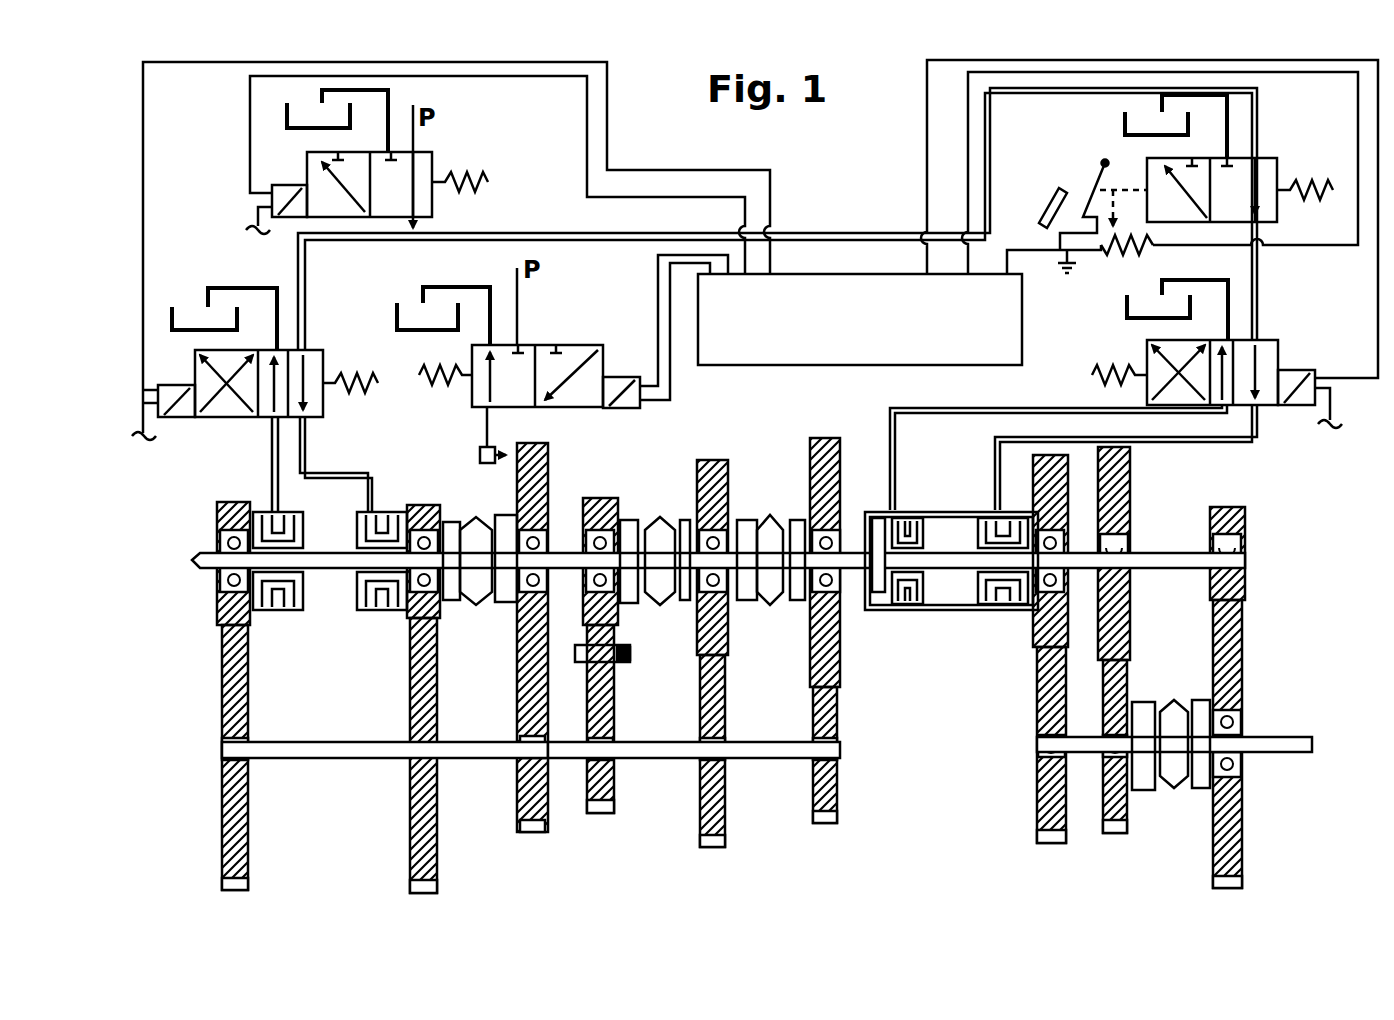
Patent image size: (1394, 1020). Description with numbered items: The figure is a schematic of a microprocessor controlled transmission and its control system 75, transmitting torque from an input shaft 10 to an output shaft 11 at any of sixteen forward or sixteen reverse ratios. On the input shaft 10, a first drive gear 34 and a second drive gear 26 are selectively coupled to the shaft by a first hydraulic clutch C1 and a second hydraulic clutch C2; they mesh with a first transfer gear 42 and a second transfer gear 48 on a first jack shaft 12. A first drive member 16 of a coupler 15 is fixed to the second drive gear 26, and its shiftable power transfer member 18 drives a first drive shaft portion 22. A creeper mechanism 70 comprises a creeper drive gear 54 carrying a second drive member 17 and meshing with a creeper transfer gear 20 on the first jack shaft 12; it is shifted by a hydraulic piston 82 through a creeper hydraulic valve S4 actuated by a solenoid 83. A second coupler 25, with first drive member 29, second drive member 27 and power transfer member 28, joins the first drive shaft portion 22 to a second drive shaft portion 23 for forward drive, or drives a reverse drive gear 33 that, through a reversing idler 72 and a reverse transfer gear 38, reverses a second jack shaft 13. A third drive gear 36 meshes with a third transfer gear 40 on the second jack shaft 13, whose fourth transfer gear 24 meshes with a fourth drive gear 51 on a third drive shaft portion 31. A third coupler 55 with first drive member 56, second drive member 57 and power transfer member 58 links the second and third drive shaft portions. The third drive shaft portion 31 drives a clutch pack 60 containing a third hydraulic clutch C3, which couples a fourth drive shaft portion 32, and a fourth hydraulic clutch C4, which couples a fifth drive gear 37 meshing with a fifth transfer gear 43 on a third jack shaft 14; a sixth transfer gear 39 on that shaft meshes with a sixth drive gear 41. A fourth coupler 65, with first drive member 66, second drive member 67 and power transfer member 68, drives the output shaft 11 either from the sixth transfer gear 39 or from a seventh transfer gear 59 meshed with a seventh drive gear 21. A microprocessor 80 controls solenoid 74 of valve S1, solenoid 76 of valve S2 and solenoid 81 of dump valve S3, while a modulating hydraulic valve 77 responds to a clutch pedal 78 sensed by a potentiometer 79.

The input shaft 10 is at (210, 570).
The output shaft 11 is at (1270, 755).
The first jack shaft 12 is at (280, 748).
The second jack shaft 13 is at (632, 748).
The third jack shaft 14 is at (1083, 770).
The coupler 15 is at (478, 495).
The first drive member 16 is at (462, 500).
The second drive member 17 is at (490, 605).
The shiftable power transfer member 18 is at (468, 606).
The creeper transfer gear 20 is at (548, 790).
The seventh drive gear 21 is at (1248, 525).
The first drive shaft portion 22 is at (558, 530).
The second drive shaft portion 23 is at (726, 612).
The fourth transfer gear 24 is at (842, 790).
The second coupler 25 is at (674, 495).
The second drive gear 26 is at (398, 505).
The second drive member 27 is at (676, 610).
The shiftable power transfer member 28 is at (660, 606).
The first drive member 29 is at (628, 512).
The third drive shaft portion 31 is at (855, 503).
The fourth drive shaft portion 32 is at (948, 510).
The reverse drive gear 33 is at (578, 522).
The first drive gear 34 is at (215, 503).
The third drive gear 36 is at (688, 500).
The fifth drive gear 37 is at (1030, 645).
The reverse transfer gear 38 is at (618, 800).
The sixth transfer gear 39 is at (1135, 820).
The third transfer gear 40 is at (728, 808).
The sixth drive gear 41 is at (1138, 500).
The first transfer gear 42 is at (250, 830).
The fifth transfer gear 43 is at (1037, 770).
The second transfer gear 48 is at (440, 810).
The fourth drive gear 51 is at (806, 455).
The creeper drive gear 54 is at (553, 455).
The third coupler 55 is at (762, 443).
The first drive member 56 is at (737, 500).
The second drive member 57 is at (790, 620).
The shiftable power transfer member 58 is at (772, 606).
The seventh transfer gear 59 is at (1245, 815).
The clutch pack 60 is at (962, 508).
The fourth coupler 65 is at (1166, 643).
The first drive member 66 is at (1140, 700).
The second drive member 67 is at (1200, 700).
The shiftable power transfer member 68 is at (1180, 792).
The creeper mechanism 70 is at (532, 838).
The reversing idler 72 is at (615, 690).
The solenoid 74 is at (172, 385).
The control system 75 is at (1262, 450).
The solenoid 76 is at (1295, 370).
The modulating hydraulic valve 77 is at (1268, 158).
The clutch pedal 78 is at (1045, 203).
The potentiometer 79 is at (1112, 262).
The microprocessor 80 is at (1022, 337).
The solenoid 81 is at (290, 185).
The hydraulic piston 82 is at (482, 447).
The solenoid 83 is at (615, 377).
The first hydraulic clutch C1 is at (312, 600).
The second hydraulic clutch C2 is at (348, 598).
The third hydraulic clutch C3 is at (930, 600).
The fourth hydraulic clutch C4 is at (938, 598).
The first electro-hydraulic solenoid valve S1 is at (312, 350).
The second electro-hydraulic solenoid valve S2 is at (1265, 340).
The electro-hydraulic dump valve S3 is at (433, 150).
The creeper hydraulic valve S4 is at (560, 345).